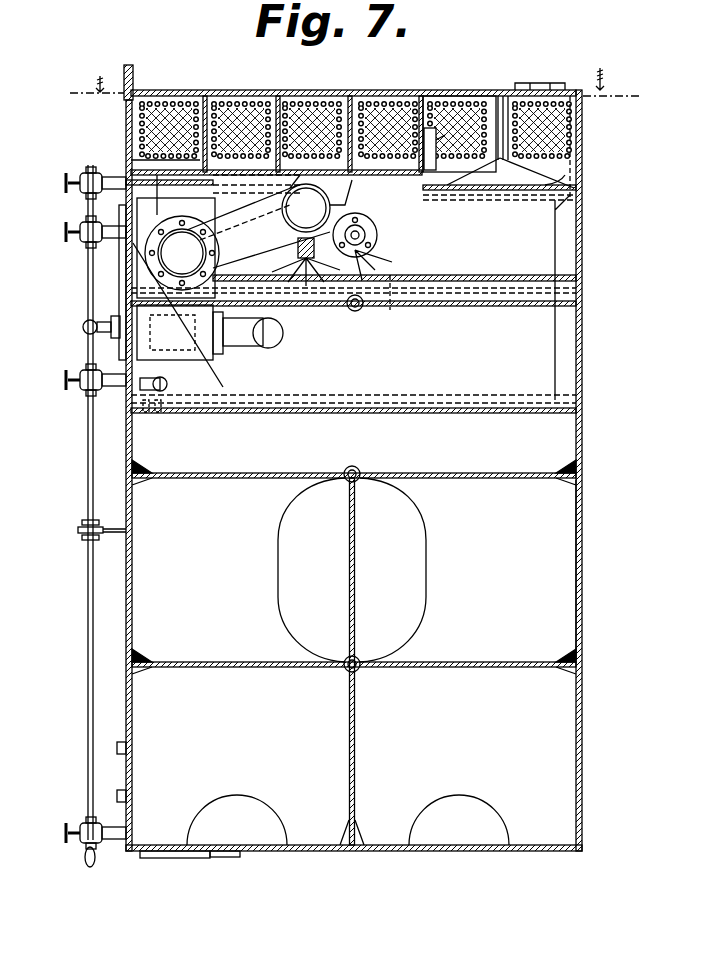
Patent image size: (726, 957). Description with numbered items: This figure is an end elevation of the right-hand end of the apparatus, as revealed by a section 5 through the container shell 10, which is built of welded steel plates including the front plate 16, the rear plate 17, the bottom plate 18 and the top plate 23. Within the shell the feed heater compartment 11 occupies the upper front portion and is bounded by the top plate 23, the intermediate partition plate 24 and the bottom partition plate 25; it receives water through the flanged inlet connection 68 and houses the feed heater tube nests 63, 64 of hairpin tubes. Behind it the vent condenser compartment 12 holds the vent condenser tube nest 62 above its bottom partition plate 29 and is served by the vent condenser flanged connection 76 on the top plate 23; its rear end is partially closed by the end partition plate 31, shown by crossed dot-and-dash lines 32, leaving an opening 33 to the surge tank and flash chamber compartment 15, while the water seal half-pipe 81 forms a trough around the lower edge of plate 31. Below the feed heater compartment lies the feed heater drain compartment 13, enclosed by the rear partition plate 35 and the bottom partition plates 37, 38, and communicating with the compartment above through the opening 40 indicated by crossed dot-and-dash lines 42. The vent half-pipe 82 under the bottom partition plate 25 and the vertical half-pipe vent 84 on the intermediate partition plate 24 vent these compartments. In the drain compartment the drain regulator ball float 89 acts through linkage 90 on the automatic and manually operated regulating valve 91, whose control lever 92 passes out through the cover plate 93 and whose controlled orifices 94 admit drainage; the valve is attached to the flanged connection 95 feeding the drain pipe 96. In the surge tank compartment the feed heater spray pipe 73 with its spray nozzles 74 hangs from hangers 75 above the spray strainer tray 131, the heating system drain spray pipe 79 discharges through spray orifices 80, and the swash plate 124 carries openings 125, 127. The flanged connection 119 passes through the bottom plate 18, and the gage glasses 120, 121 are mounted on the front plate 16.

The section line 5 is at (349, 93).
The container shell 10 is at (580, 350).
The feed heater compartment 11 is at (232, 100).
The vent condenser compartment 12 is at (505, 125).
The feed heater drain compartment 13 is at (140, 172).
The surge tank and flash chamber compartment 15 is at (555, 440).
The front plate 16 is at (126, 595).
The rear plate 17 is at (580, 595).
The bottom plate 18 is at (282, 850).
The top plate 23 is at (375, 100).
The intermediate partition plate 24 is at (455, 92).
The bottom partition plate 25 is at (365, 180).
The bottom partition plate 29 is at (560, 185).
The end partition plate 31 is at (509, 135).
The crossed dot-and-dash lines 32 is at (510, 174).
The opening 33 is at (495, 112).
The rear partition plate 35 is at (230, 227).
The bottom partition plate 37 is at (223, 390).
The bottom partition plate 38 is at (170, 185).
The opening 40 is at (172, 230).
The crossed dot-and-dash lines 42 is at (135, 160).
The vent condenser tube nest 62 is at (572, 125).
The feed heater tube nest 63 is at (310, 105).
The feed heater tube nest 64 is at (192, 100).
The flanged inlet connection 68 is at (125, 80).
The feed heater spray pipe 73 is at (91, 215).
The spray nozzles 74 is at (332, 306).
The hangers 75 is at (345, 210).
The vent condenser flanged connection 76 is at (545, 90).
The heating system drain spray pipe 79 is at (370, 235).
The spray orifices 80 is at (375, 252).
The water seal half-pipe 81 is at (510, 200).
The vent half-pipe 82 is at (245, 180).
The vertical half-pipe vent 84 is at (440, 195).
The drain regulator ball float 89 is at (119, 262).
The linkage 90 is at (213, 325).
The automatic and manually operated regulating valve 91 is at (110, 353).
The control lever 92 is at (90, 325).
The cover plate 93 is at (120, 290).
The controlled orifices 94 is at (172, 400).
The flanged connection 95 is at (215, 360).
The drain pipe 96 is at (262, 347).
The flanged connection 119 is at (170, 858).
The feed heater drain compartment gage glass 120 is at (80, 232).
The surge tank and flash chamber compartment gage glass 121 is at (90, 478).
The swash plate 124 is at (578, 665).
The openings 125 is at (470, 800).
The openings 127 is at (420, 600).
The spray strainer tray 131 is at (390, 310).